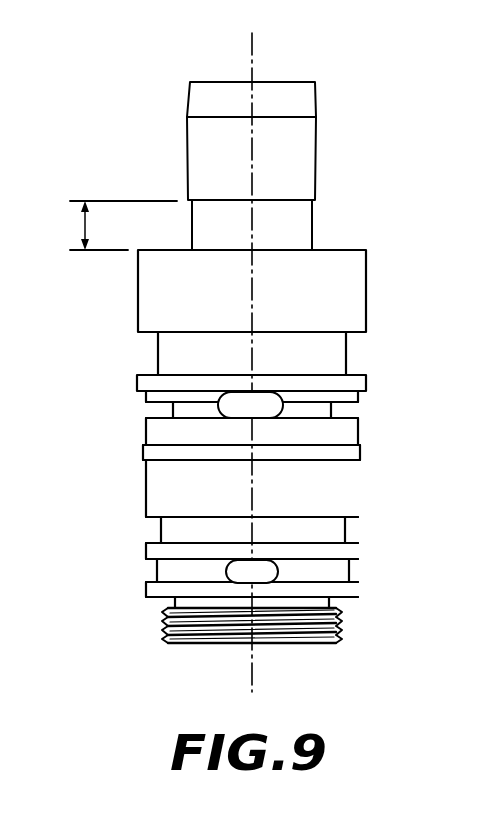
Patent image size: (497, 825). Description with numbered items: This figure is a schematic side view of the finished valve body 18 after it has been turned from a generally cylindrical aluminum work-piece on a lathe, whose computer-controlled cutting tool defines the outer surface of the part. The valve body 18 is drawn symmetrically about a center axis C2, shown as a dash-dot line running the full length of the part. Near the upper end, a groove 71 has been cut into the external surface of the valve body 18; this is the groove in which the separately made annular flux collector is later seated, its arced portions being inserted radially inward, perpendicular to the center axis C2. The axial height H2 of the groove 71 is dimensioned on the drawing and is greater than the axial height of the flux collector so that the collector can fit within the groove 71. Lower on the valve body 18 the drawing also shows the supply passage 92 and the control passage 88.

The valve body 18 is at (188, 158).
The groove 71 is at (312, 225).
The supply passage 92 is at (268, 405).
The control passage 88 is at (265, 572).
The center axis C2 is at (252, 45).
The axial height H2 is at (108, 225).